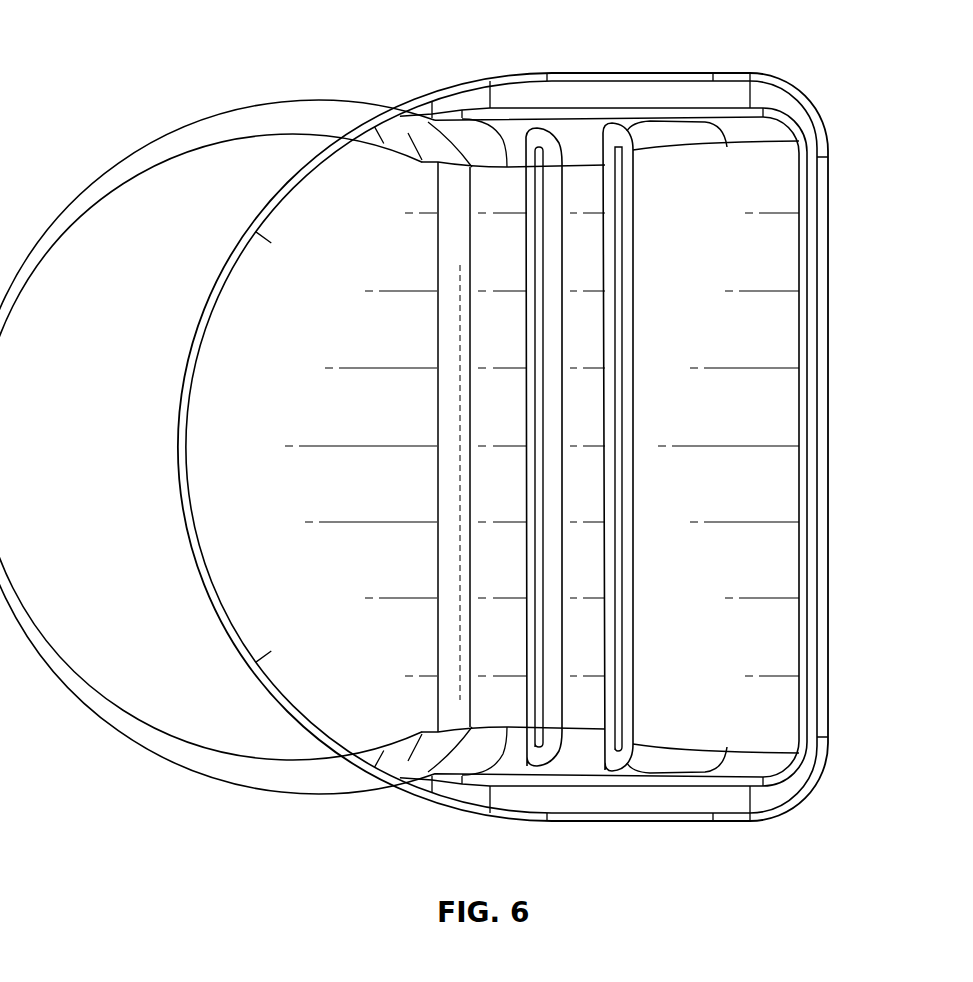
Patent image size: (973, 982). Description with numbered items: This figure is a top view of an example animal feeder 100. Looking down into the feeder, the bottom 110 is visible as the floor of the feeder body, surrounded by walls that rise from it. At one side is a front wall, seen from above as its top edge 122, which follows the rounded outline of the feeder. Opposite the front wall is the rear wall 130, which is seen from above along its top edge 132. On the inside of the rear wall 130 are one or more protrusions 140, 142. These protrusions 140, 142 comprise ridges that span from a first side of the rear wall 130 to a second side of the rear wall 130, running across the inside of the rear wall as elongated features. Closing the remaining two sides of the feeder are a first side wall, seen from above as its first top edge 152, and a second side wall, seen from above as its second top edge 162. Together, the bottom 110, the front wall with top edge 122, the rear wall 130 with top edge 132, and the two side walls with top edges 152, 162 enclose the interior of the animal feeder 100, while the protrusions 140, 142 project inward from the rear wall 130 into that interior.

The animal feeder 100 is at (203, 106).
The bottom 110 is at (273, 533).
The top edge of front wall 122 is at (220, 422).
The rear wall 130 is at (720, 340).
The top edge of rear wall 132 is at (805, 241).
The protrusion 140 is at (540, 568).
The protrusion 142 is at (605, 433).
The first top edge of first side wall 152 is at (617, 795).
The second top edge of second side wall 162 is at (615, 92).